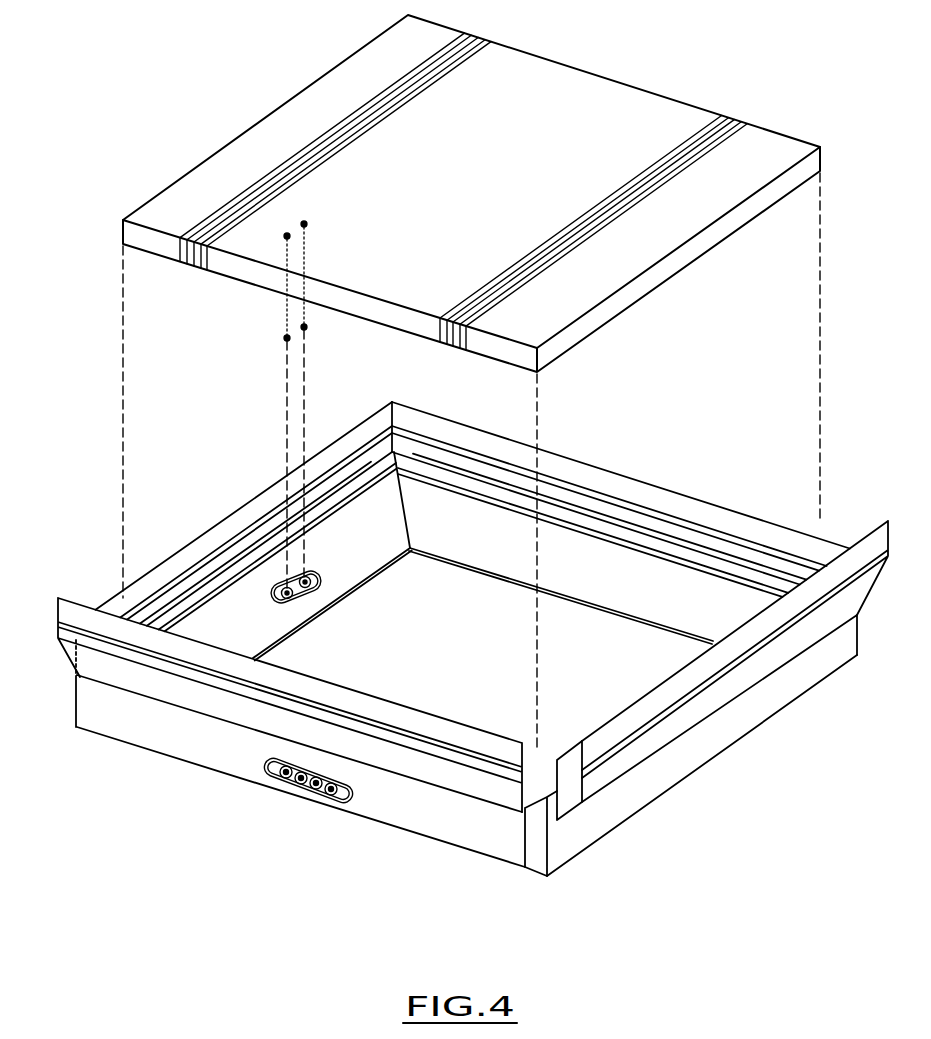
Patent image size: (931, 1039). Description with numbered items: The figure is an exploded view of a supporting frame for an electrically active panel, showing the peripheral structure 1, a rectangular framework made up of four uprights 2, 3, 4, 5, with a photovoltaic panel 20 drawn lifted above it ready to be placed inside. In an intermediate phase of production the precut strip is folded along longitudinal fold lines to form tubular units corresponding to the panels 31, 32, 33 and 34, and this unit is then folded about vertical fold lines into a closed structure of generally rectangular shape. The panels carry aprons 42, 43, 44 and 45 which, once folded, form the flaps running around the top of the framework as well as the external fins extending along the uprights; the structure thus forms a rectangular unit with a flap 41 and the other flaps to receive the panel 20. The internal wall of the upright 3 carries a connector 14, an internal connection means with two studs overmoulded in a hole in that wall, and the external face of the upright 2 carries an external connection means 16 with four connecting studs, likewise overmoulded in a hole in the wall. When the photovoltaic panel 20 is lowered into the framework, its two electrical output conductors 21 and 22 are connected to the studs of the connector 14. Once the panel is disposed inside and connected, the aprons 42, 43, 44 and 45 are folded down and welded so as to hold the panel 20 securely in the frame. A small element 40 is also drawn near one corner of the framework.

The peripheral structure 1 is at (466, 466).
The upright 2 is at (466, 652).
The upright 3 is at (483, 563).
The upright 4 is at (517, 590).
The upright 5 is at (705, 777).
The connector 14 is at (270, 598).
The external connection means 16 is at (298, 796).
The photovoltaic panel 20 is at (597, 93).
The electrical output conductor 21 is at (287, 313).
The electrical output conductor 22 is at (310, 313).
The panel 31 is at (287, 754).
The panel 32 is at (295, 626).
The panel 33 is at (643, 592).
The panel 34 is at (707, 745).
The tab 40 is at (570, 797).
The flap 41 is at (540, 852).
The apron 42 is at (77, 640).
The apron 43 is at (240, 507).
The apron 44 is at (660, 500).
The apron 45 is at (822, 580).